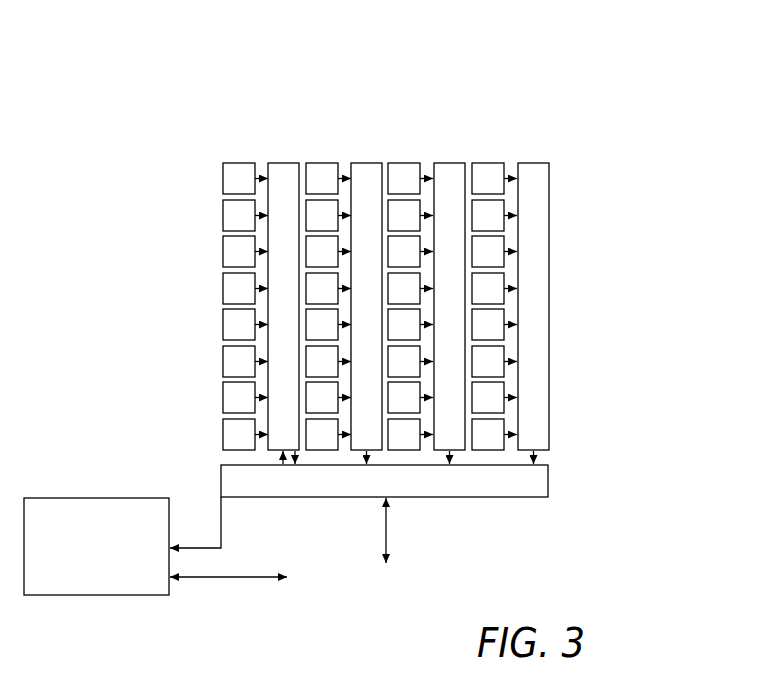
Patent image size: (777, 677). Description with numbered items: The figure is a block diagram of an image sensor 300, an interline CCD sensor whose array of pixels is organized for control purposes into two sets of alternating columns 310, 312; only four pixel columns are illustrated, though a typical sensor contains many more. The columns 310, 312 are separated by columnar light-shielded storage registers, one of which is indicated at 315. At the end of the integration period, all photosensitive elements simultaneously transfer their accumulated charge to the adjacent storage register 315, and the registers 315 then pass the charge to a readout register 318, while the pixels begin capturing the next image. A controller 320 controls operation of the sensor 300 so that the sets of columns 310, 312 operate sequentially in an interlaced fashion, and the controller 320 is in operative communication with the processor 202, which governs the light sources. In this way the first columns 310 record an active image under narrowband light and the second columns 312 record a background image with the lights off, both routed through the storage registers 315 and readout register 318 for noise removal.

The image sensor 300 is at (203, 162).
The first set of pixel columns 310 is at (437, 145).
The second set of pixel columns 312 is at (378, 147).
The storage register 315 is at (570, 222).
The readout register 318 is at (572, 487).
The controller 320 is at (122, 546).
The processor 202 is at (289, 580).